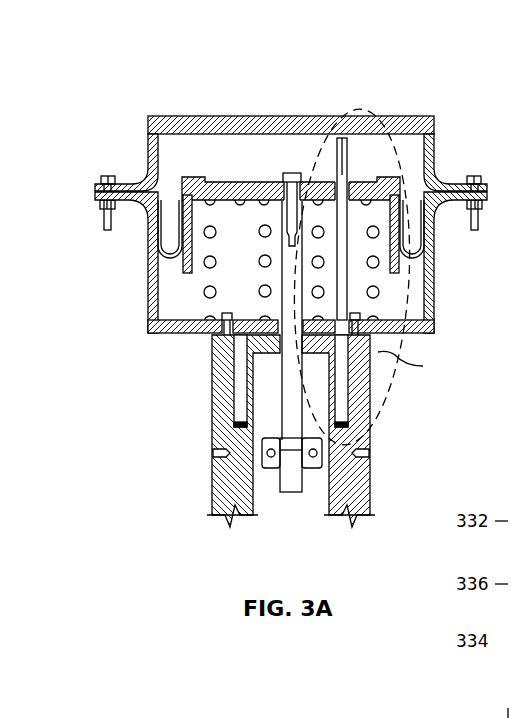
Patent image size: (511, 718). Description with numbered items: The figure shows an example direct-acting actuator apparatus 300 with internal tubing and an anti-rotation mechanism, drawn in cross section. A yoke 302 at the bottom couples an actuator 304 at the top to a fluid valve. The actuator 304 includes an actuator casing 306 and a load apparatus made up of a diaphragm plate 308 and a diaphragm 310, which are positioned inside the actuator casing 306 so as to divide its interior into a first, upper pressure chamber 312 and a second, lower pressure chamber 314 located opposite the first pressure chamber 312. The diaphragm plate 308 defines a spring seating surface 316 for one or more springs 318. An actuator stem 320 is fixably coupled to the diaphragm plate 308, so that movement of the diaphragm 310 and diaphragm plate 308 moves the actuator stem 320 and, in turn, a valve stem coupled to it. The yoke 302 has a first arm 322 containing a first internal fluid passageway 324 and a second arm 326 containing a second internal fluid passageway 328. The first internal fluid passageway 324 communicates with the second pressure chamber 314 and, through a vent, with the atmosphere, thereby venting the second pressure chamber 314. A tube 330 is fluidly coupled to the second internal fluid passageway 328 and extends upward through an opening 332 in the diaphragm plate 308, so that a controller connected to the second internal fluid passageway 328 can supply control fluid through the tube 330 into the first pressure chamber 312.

The actuator apparatus 300 is at (147, 45).
The yoke 302 is at (92, 436).
The actuator 304 is at (92, 266).
The actuator casing 306 is at (438, 150).
The diaphragm plate 308 is at (221, 182).
The diaphragm 310 is at (151, 288).
The first pressure chamber 312 is at (268, 164).
The second pressure chamber 314 is at (257, 282).
The spring seating surface 316 is at (166, 243).
The springs 318 is at (210, 338).
The actuator stem 320 is at (293, 424).
The first arm 322 is at (218, 484).
The first internal fluid passageway 324 is at (240, 383).
The second arm 326 is at (372, 497).
The second internal fluid passageway 328 is at (343, 392).
The tube 330 is at (345, 150).
The opening 332 is at (321, 178).